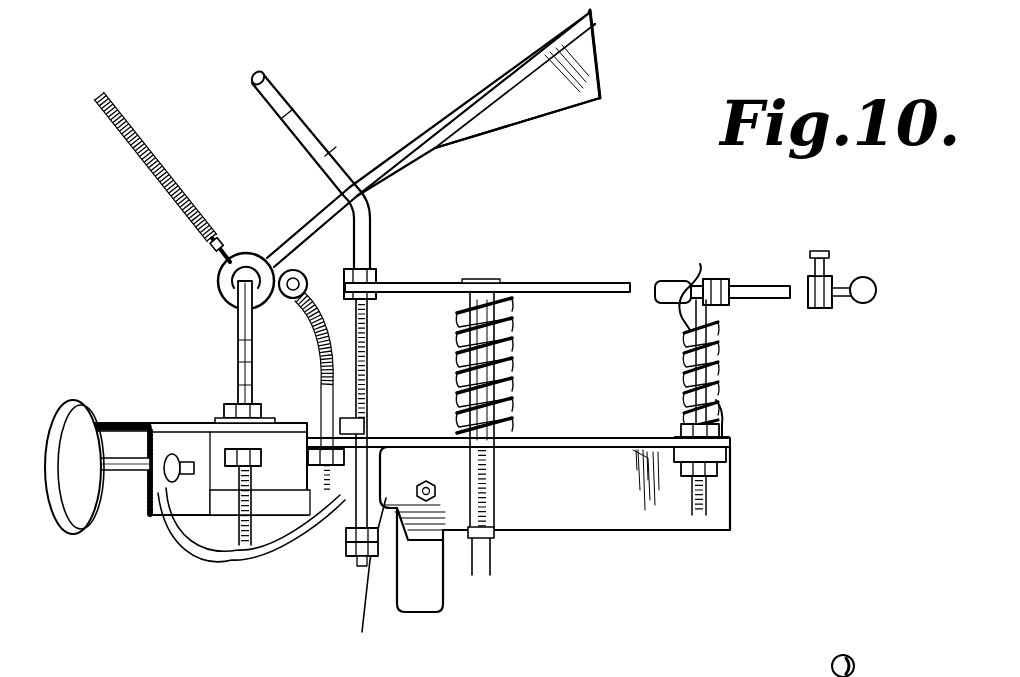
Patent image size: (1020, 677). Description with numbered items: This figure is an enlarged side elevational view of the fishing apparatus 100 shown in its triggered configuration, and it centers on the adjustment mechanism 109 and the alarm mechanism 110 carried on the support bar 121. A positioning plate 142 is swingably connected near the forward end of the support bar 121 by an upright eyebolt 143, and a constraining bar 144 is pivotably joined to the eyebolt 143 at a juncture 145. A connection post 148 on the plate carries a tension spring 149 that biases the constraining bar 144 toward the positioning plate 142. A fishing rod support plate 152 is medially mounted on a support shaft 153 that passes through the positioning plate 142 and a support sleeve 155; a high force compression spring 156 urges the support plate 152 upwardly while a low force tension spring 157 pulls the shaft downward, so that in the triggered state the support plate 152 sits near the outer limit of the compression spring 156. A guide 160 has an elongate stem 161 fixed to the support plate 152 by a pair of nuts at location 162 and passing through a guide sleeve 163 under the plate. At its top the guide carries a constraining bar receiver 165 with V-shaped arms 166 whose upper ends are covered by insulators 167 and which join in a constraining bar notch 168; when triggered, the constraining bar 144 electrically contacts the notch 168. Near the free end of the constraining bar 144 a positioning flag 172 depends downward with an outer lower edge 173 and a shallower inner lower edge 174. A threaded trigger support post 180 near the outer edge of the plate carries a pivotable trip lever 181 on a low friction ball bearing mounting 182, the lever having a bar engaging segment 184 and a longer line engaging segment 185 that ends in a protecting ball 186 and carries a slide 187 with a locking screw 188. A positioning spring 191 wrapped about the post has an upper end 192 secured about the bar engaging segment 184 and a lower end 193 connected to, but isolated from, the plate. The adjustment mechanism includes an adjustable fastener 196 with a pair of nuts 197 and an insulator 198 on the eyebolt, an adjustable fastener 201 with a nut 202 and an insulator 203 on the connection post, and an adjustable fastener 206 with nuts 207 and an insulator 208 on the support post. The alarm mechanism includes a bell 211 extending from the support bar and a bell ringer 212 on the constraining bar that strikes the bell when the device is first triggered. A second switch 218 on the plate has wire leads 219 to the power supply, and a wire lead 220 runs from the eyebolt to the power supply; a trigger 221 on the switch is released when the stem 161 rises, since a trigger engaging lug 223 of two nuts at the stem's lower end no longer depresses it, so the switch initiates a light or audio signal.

The fishing apparatus 100 is at (322, 616).
The adjustment mechanism 109 is at (776, 443).
The alarm mechanism 110 is at (72, 545).
The support bar 121 is at (110, 422).
The positioning plate 142 is at (672, 535).
The upright eyebolt 143 is at (236, 334).
The constraining bar 144 is at (437, 128).
The juncture 145 is at (216, 281).
The connection post 148 is at (300, 497).
The tension spring 149 is at (306, 338).
The fishing rod support plate 152 is at (567, 283).
The support shaft 153 is at (514, 325).
The support sleeve 155 is at (500, 532).
The compression spring 156 is at (514, 372).
The tension spring 157 is at (496, 462).
The guide 160 is at (373, 230).
The elongate stem 161 is at (370, 350).
The connection location 162 is at (380, 276).
The guide sleeve 163 is at (384, 462).
The constraining bar receiver 165 is at (308, 118).
The arms 166 is at (278, 80).
The insulators 167 is at (333, 156).
The constraining bar notch 168 is at (374, 193).
The positioning flag 172 is at (596, 45).
The outer lower edge 173 is at (601, 78).
The inner lower edge 174 is at (558, 114).
The trigger support post 180 is at (720, 365).
The trip lever 181 is at (776, 284).
The ball bearing mounting 182 is at (716, 270).
The bar engaging segment 184 is at (675, 282).
The line engaging segment 185 is at (782, 298).
The protecting ball 186 is at (876, 296).
The slide 187 is at (836, 276).
The locking screw 188 is at (824, 252).
The positioning spring 191 is at (716, 338).
The upper end 192 is at (702, 264).
The lower end 193 is at (728, 436).
The adjustable fastener 196 is at (182, 388).
The nuts 197 is at (233, 398).
The insulator 198 is at (224, 410).
The adjustable fastener 201 is at (306, 408).
The nut 202 is at (368, 424).
The insulator 203 is at (362, 450).
The adjustable fastener 206 is at (665, 395).
The nuts 207 is at (682, 430).
The insulator 208 is at (734, 454).
The bell 211 is at (56, 398).
The bell ringer 212 is at (144, 142).
The second switch 218 is at (446, 598).
The wire leads 219 is at (212, 553).
The wire lead 220 is at (150, 491).
The trigger 221 is at (366, 628).
The trigger engaging lug 223 is at (342, 556).